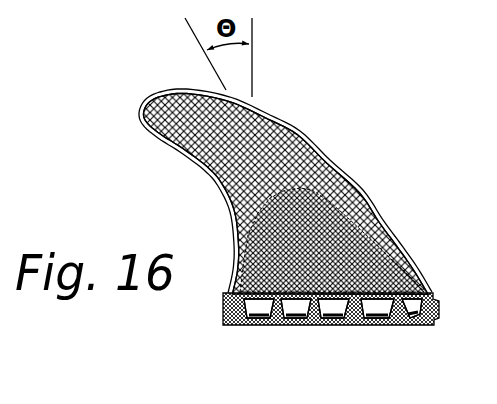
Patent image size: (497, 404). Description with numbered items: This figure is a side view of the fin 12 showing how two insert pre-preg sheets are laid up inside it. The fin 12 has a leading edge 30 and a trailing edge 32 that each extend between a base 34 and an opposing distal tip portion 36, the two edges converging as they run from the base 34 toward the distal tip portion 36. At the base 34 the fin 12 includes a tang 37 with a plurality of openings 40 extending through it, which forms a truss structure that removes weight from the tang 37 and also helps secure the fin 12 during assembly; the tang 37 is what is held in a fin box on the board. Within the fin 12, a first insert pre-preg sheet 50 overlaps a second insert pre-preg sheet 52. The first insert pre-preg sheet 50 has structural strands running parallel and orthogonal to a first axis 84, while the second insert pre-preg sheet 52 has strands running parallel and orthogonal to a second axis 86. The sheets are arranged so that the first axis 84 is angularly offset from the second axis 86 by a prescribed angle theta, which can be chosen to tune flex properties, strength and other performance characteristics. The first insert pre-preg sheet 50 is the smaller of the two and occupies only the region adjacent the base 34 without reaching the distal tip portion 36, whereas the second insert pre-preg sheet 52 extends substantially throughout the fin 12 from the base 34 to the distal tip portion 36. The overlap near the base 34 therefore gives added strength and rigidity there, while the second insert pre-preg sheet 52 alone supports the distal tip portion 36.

The fin 12 is at (284, 203).
The leading edge 30 is at (327, 163).
The trailing edge 32 is at (216, 184).
The base 34 is at (408, 272).
The distal tip portion 36 is at (150, 108).
The tang 37 is at (331, 327).
The openings 40 is at (288, 313).
The first insert pre-preg sheet 50 is at (360, 234).
The second insert pre-preg sheet 52 is at (270, 120).
The first axis 84 is at (191, 33).
The second axis 86 is at (254, 30).